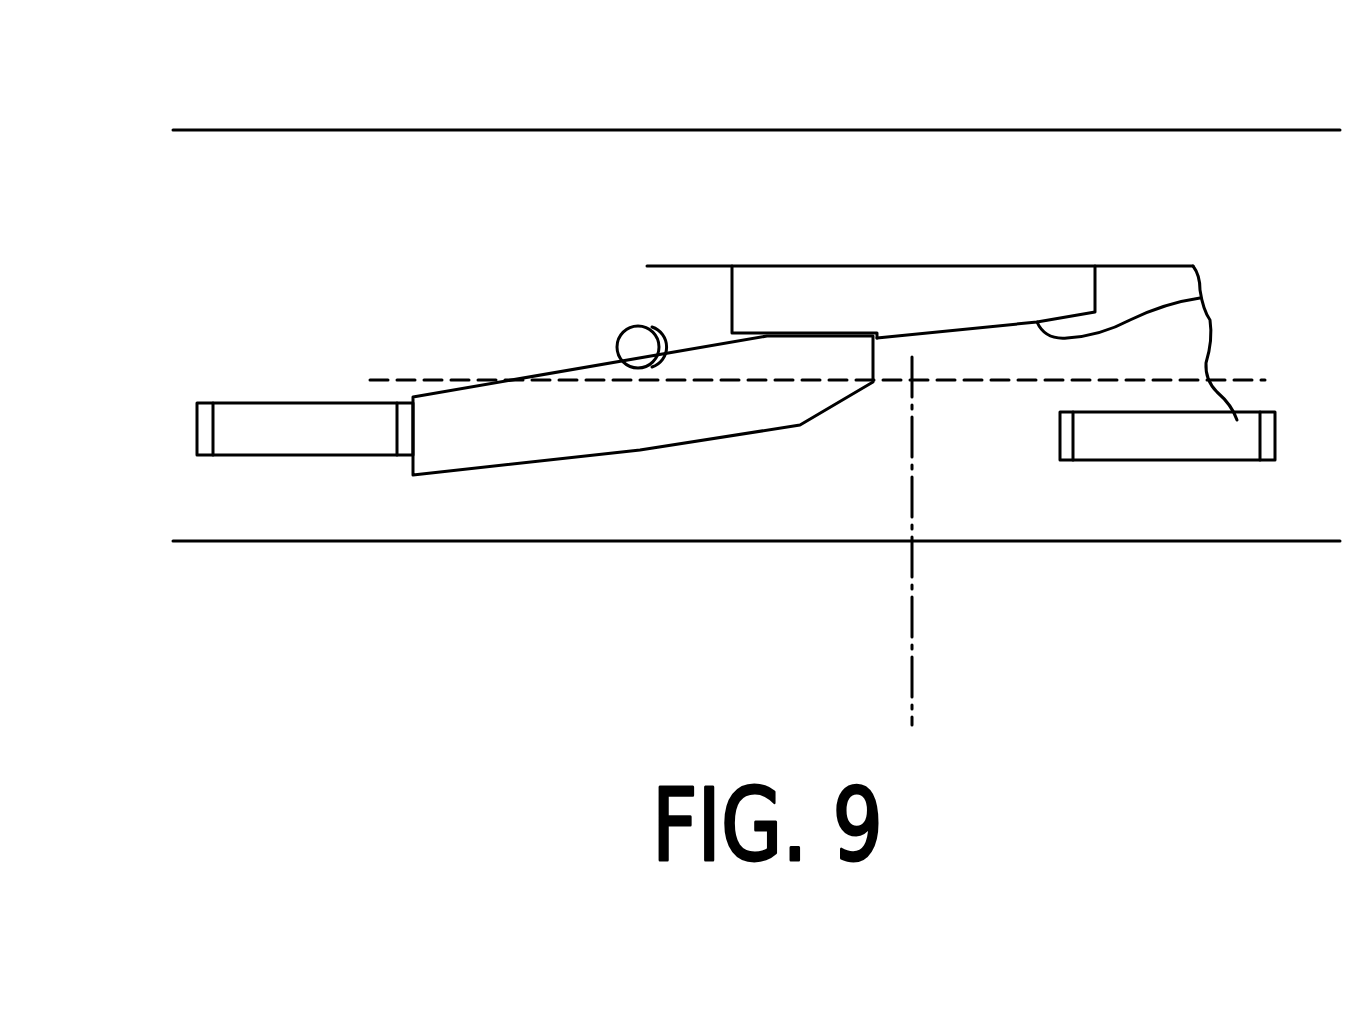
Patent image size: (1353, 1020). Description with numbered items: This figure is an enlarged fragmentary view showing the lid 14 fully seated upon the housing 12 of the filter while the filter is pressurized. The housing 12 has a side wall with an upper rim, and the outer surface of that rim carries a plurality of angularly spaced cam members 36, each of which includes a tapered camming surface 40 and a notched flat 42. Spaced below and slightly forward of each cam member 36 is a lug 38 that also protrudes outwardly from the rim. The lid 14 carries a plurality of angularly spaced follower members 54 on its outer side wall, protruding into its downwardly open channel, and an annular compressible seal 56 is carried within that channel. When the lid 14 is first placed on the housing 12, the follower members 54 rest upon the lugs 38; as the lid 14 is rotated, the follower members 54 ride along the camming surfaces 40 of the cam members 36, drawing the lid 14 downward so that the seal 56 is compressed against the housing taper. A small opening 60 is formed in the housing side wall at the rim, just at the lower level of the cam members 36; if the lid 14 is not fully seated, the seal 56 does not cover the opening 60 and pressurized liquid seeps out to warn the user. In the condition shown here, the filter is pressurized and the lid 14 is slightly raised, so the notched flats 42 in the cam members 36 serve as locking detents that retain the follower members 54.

The housing 12 is at (345, 541).
The lid 14 is at (433, 130).
The cam member 36 is at (878, 266).
The lug 38 is at (288, 404).
The tapered camming surface 40 is at (1207, 298).
The notched flat 42 is at (820, 331).
The follower member 54 is at (520, 450).
The annular compressible seal 56 is at (1000, 383).
The small opening 60 is at (620, 330).